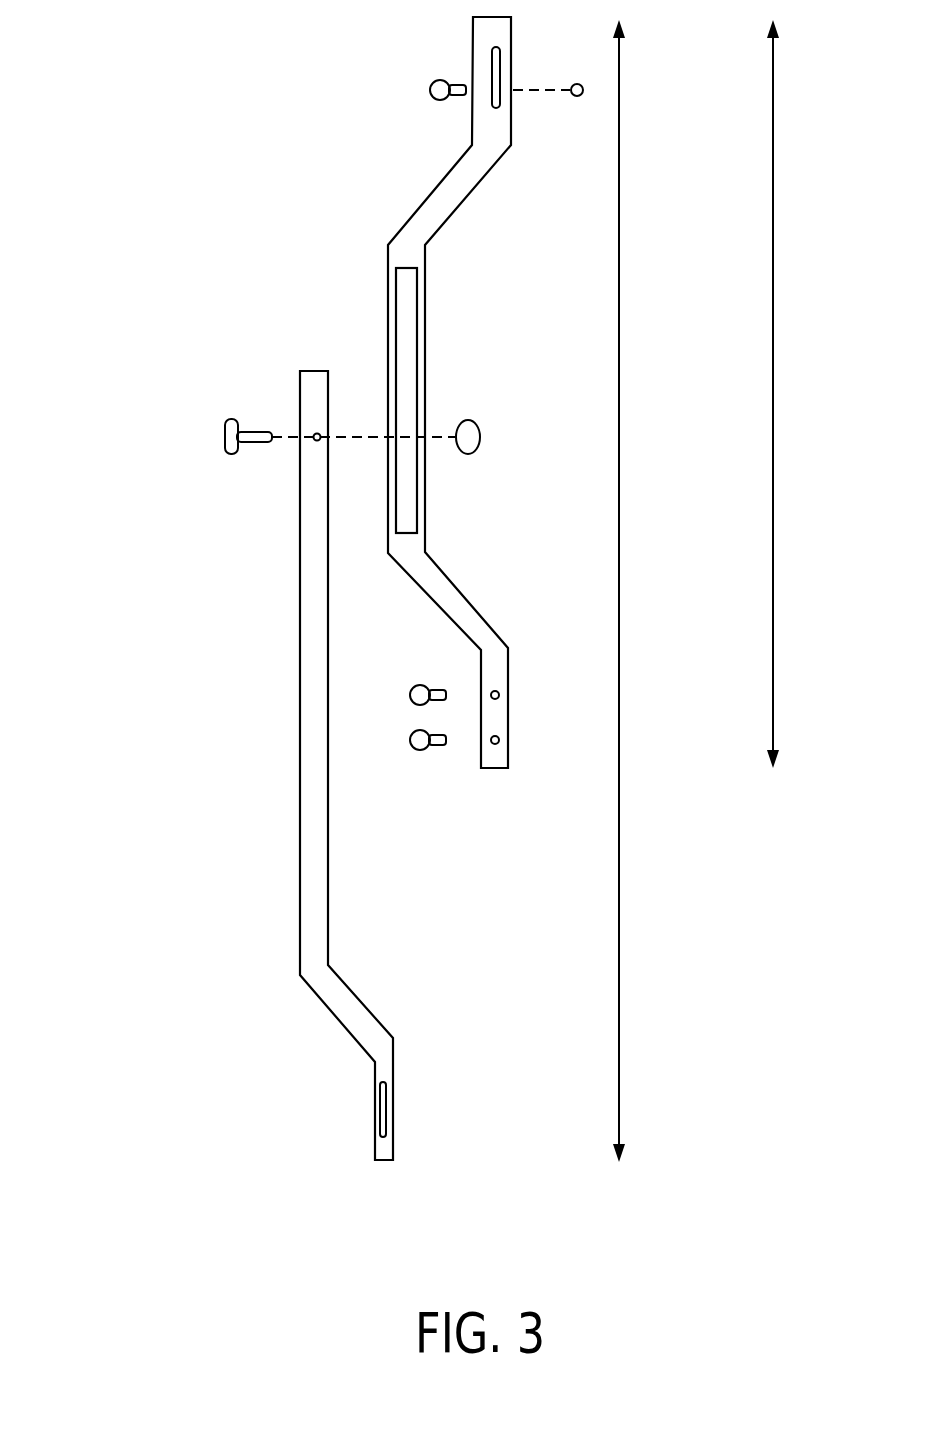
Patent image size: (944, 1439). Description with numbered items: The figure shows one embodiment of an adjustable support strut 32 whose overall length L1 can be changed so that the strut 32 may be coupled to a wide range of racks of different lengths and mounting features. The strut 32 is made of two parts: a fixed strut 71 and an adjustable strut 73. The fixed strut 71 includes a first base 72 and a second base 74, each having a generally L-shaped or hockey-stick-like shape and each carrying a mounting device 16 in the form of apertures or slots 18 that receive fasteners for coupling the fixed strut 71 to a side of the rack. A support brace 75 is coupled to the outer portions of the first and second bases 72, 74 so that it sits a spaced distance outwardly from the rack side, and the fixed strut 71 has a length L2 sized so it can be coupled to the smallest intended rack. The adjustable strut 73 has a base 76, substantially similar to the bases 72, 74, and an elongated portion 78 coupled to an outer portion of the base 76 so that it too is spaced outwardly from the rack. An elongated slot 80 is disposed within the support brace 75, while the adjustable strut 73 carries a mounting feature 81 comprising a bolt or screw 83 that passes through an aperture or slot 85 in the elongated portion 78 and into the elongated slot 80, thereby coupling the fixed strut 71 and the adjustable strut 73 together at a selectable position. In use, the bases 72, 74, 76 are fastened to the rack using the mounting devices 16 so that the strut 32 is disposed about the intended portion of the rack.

The mounting device 16 is at (408, 62).
The apertures or slots 18 is at (493, 50).
The strut 32 is at (124, 176).
The fixed strut 71 is at (362, 132).
The first base 72 is at (513, 48).
The adjustable strut 73 is at (197, 684).
The second base 74 is at (510, 718).
The support brace 75 is at (427, 308).
The base 76 is at (394, 1105).
The elongated portion 78 is at (298, 605).
The elongated slot 80 is at (396, 290).
The mounting feature 81 is at (198, 419).
The bolt or screw 83 is at (254, 430).
The aperture or slot 85 is at (319, 432).
The adjustable length L1 is at (620, 412).
The length of fixed strut L2 is at (775, 386).